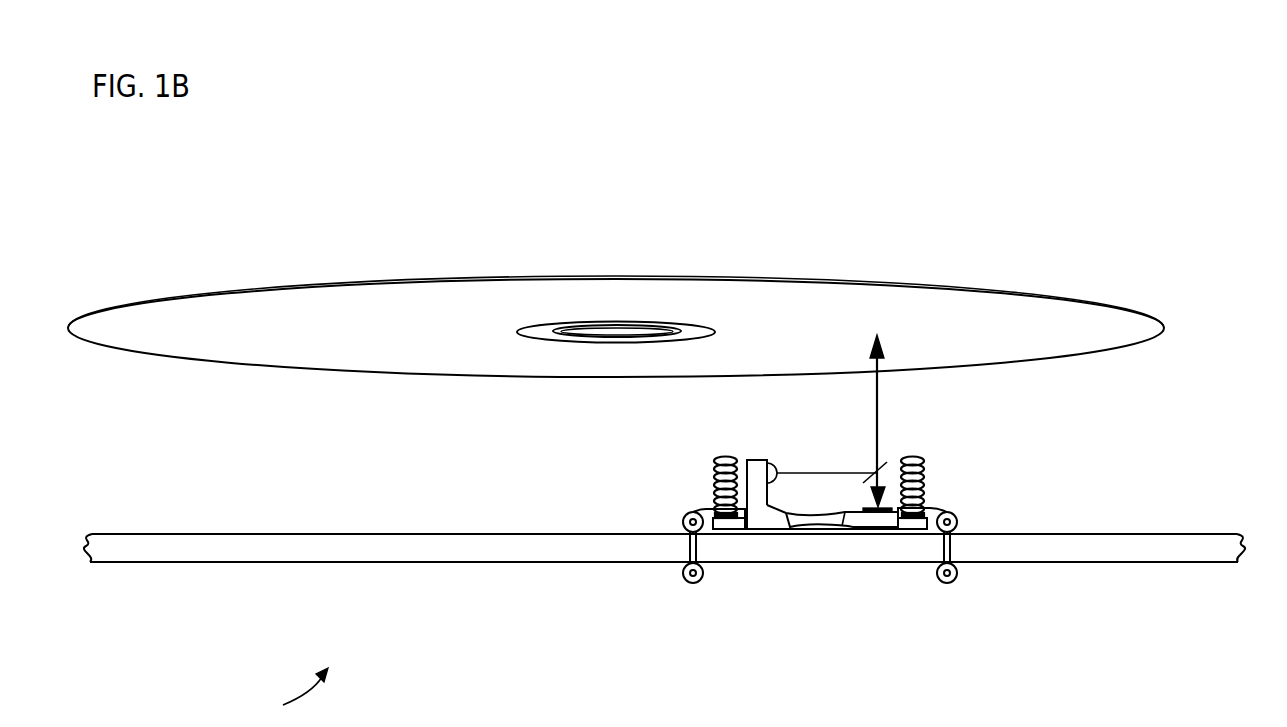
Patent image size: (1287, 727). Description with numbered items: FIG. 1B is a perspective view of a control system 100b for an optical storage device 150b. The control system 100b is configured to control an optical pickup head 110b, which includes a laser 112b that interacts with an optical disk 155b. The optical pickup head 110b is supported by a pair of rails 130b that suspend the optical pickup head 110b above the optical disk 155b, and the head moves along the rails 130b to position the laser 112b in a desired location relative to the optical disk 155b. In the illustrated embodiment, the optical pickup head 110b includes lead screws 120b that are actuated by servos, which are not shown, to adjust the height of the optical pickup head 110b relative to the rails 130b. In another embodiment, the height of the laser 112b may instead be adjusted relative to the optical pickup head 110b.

The optical disk 155b is at (1007, 292).
The rails 130b is at (1145, 563).
The control system 100b is at (831, 473).
The laser 112b is at (752, 462).
The lead screws 120b is at (718, 462).
The optical pickup head 110b is at (838, 528).
The optical storage device 150b is at (282, 696).